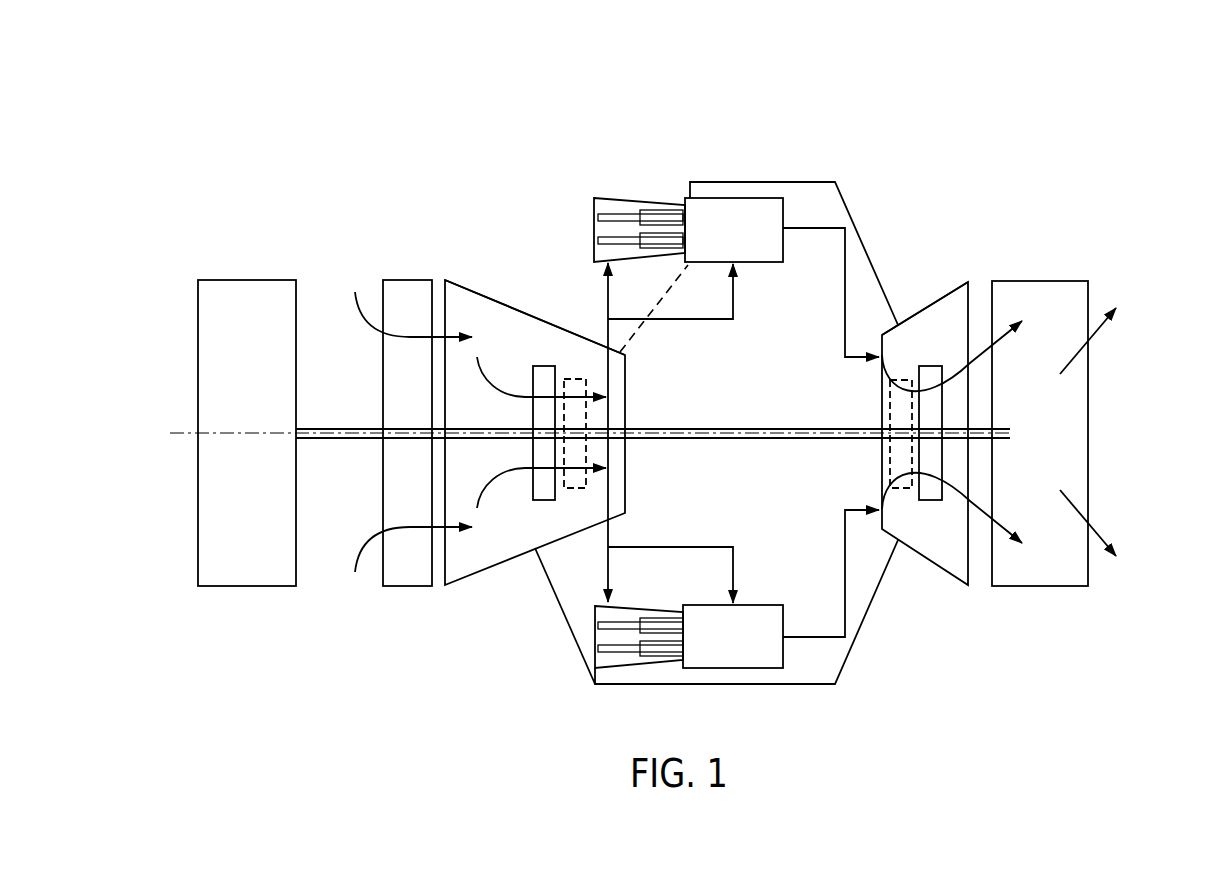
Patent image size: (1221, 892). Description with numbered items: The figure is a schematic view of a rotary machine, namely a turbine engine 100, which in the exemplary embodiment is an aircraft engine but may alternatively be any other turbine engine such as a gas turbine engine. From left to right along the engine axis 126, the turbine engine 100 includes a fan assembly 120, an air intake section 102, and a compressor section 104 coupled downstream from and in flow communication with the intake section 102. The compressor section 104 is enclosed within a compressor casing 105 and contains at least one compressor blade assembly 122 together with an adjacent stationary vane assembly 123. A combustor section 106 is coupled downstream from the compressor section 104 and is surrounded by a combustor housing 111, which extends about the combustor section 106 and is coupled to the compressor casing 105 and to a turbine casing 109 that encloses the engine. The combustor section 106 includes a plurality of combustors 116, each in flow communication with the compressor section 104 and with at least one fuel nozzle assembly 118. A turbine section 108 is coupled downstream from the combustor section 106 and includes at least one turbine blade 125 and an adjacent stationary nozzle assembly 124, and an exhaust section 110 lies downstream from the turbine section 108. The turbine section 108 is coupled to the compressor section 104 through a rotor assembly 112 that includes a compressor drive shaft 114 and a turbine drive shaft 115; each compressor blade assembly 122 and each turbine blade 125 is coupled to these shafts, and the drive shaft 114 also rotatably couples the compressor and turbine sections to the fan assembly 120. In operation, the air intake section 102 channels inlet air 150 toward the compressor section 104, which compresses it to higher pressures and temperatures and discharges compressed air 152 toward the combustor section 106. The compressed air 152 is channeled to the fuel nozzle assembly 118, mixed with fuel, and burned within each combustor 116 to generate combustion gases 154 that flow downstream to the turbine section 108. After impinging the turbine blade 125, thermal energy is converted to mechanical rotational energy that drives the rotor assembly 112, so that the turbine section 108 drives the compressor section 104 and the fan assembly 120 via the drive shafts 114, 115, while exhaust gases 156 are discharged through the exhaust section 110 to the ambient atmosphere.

The turbine engine 100 is at (237, 116).
The air intake section 102 is at (408, 280).
The compressor section 104 is at (457, 270).
The compressor casing 105 is at (508, 305).
The combustor section 106 is at (881, 211).
The turbine section 108 is at (945, 282).
The turbine casing 109 is at (902, 320).
The exhaust section 110 is at (1040, 281).
The combustor housing 111 is at (800, 182).
The rotor assembly 112 is at (693, 419).
The compressor drive shaft 114 is at (490, 442).
The turbine drive shaft 115 is at (952, 452).
The combustor 116 is at (735, 198).
The fuel nozzle assembly 118 is at (621, 200).
The fan assembly 120 is at (248, 280).
The compressor blade assembly 122 is at (575, 490).
The stationary vane assembly 123 is at (540, 550).
The stationary nozzle assembly 124 is at (905, 487).
The turbine blade 125 is at (930, 500).
The centerline axis 126 is at (178, 430).
The inlet air 150 is at (362, 318).
The compressed air 152 is at (497, 377).
The combustion gases 154 is at (983, 367).
The exhaust gases 156 is at (1100, 335).